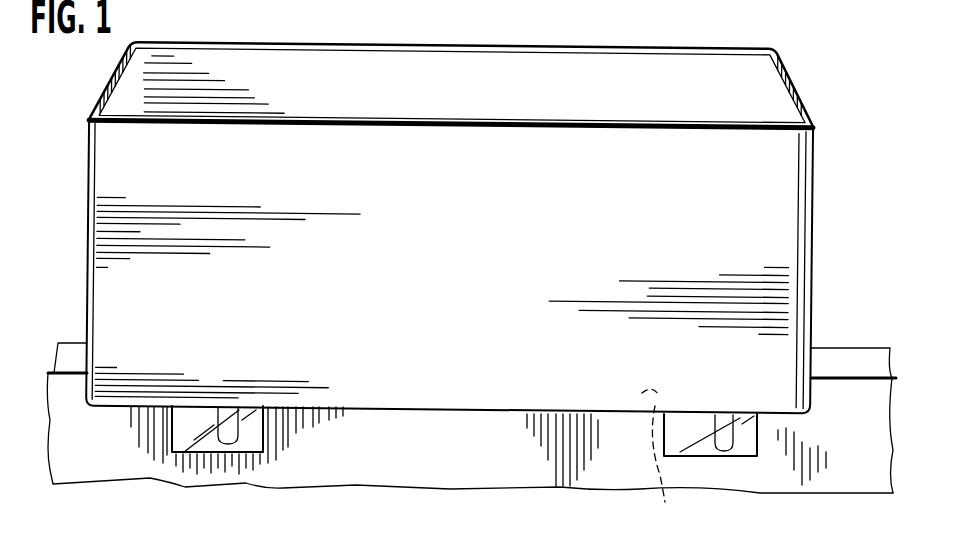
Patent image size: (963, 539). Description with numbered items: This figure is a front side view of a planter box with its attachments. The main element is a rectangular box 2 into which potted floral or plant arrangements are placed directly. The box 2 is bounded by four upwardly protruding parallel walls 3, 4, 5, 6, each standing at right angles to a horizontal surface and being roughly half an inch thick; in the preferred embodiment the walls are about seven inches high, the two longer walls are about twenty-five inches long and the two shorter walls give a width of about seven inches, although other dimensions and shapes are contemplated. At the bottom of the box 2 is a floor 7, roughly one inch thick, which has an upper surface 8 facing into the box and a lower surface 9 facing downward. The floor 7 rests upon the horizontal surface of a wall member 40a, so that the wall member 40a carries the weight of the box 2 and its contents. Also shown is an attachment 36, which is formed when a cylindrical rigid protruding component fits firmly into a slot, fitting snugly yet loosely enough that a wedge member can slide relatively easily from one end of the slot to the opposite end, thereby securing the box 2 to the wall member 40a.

The rectangular box 2 is at (815, 213).
The wall 3 is at (85, 157).
The wall 4 is at (306, 42).
The wall 5 is at (807, 96).
The wall 6 is at (118, 65).
The floor 7 is at (836, 378).
The upper surface 8 is at (699, 457).
The lower surface 9 is at (640, 414).
The attachment 36 is at (172, 432).
The wall member 40a is at (860, 482).